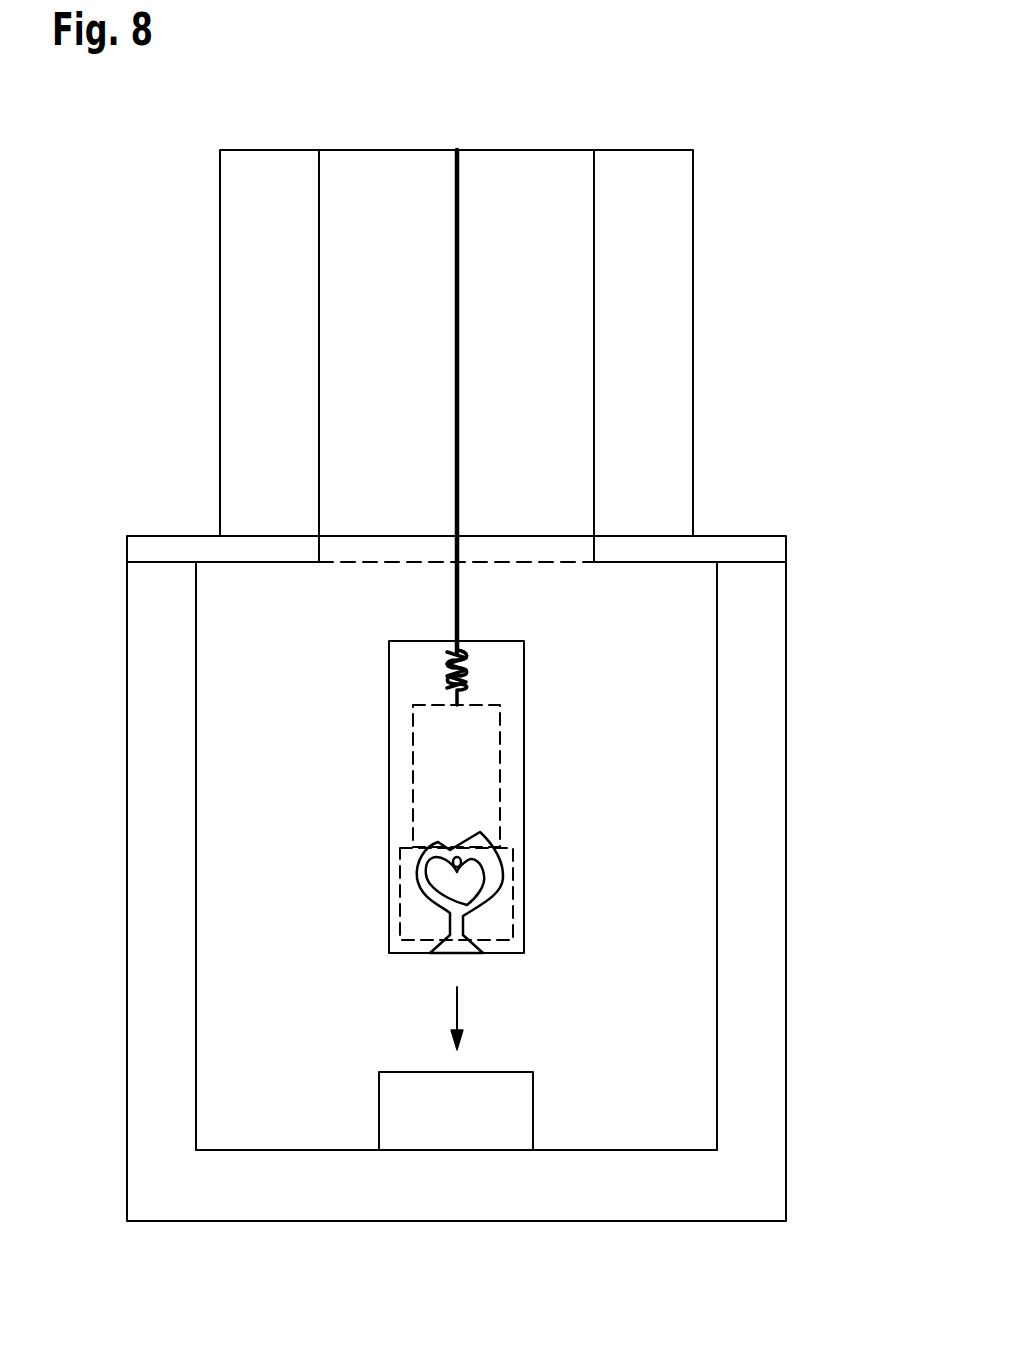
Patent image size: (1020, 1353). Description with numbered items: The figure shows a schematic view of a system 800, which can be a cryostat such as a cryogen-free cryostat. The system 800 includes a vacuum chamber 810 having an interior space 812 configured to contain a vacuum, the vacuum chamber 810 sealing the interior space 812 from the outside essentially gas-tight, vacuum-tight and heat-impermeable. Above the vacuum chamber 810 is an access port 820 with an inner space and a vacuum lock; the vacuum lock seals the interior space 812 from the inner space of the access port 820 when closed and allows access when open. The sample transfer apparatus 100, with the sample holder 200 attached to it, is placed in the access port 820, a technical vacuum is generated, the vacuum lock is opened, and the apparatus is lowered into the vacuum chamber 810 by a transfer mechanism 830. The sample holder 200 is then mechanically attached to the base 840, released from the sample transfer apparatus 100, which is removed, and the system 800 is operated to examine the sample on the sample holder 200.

The system 800 is at (176, 126).
The vacuum chamber 810 is at (786, 672).
The interior space 812 is at (667, 940).
The access port 820 is at (693, 250).
The transfer mechanism 830 is at (466, 185).
The base 840 is at (455, 1125).
The sample transfer apparatus 100 is at (389, 787).
The sample holder 200 is at (400, 905).